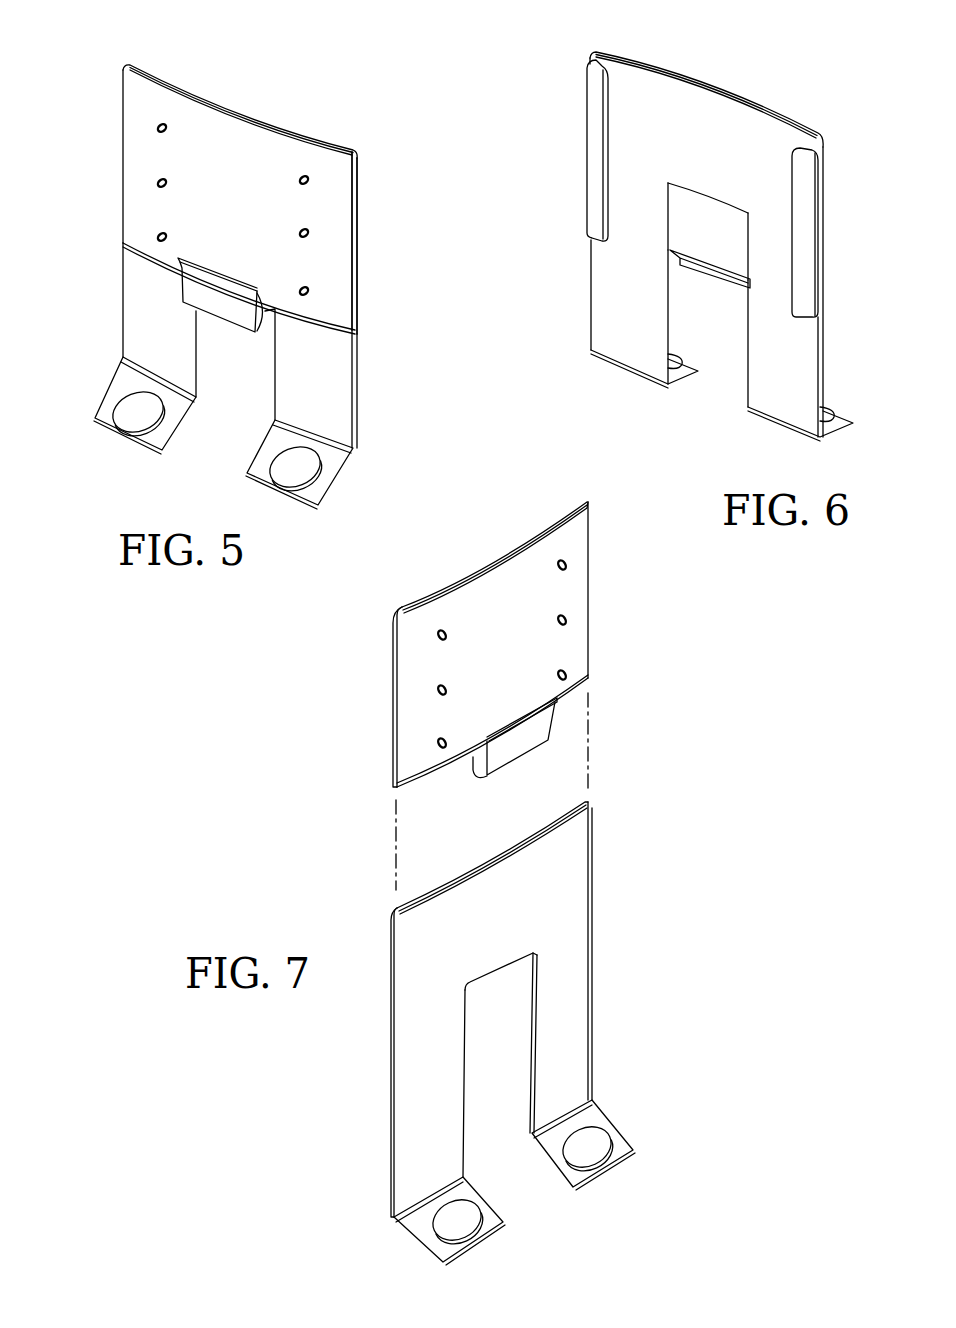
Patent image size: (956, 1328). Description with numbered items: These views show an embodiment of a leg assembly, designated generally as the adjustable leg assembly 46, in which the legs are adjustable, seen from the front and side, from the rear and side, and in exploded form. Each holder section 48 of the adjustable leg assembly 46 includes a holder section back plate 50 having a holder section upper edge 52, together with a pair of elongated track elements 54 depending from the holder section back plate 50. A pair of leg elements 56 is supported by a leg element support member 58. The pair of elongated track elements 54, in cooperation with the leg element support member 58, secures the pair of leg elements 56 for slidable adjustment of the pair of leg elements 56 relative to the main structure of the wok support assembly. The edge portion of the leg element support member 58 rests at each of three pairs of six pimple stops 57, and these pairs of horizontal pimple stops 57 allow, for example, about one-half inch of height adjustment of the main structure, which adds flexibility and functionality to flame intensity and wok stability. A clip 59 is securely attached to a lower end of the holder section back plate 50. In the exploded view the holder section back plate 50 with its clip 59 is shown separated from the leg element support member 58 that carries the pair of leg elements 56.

In FIG. 5, the adjustable leg assembly 46 is at (101, 293).
In FIG. 5, the holder section 48 is at (381, 146).
In FIG. 5, the holder section back plate 50 is at (287, 150).
In FIG. 7, the holder section back plate 50 is at (550, 598).
In FIG. 5, the holder section upper edge 52 is at (215, 102).
In FIG. 7, the holder section upper edge 52 is at (495, 562).
In FIG. 6, the elongated track elements 54 is at (803, 182).
In FIG. 6, the leg elements 56 is at (638, 337).
In FIG. 7, the leg elements 56 is at (565, 998).
In FIG. 5, the pimple stops 57 is at (309, 228).
In FIG. 6, the leg element support member 58 is at (680, 148).
In FIG. 7, the leg element support member 58 is at (503, 898).
In FIG. 7, the clip 59 is at (537, 730).